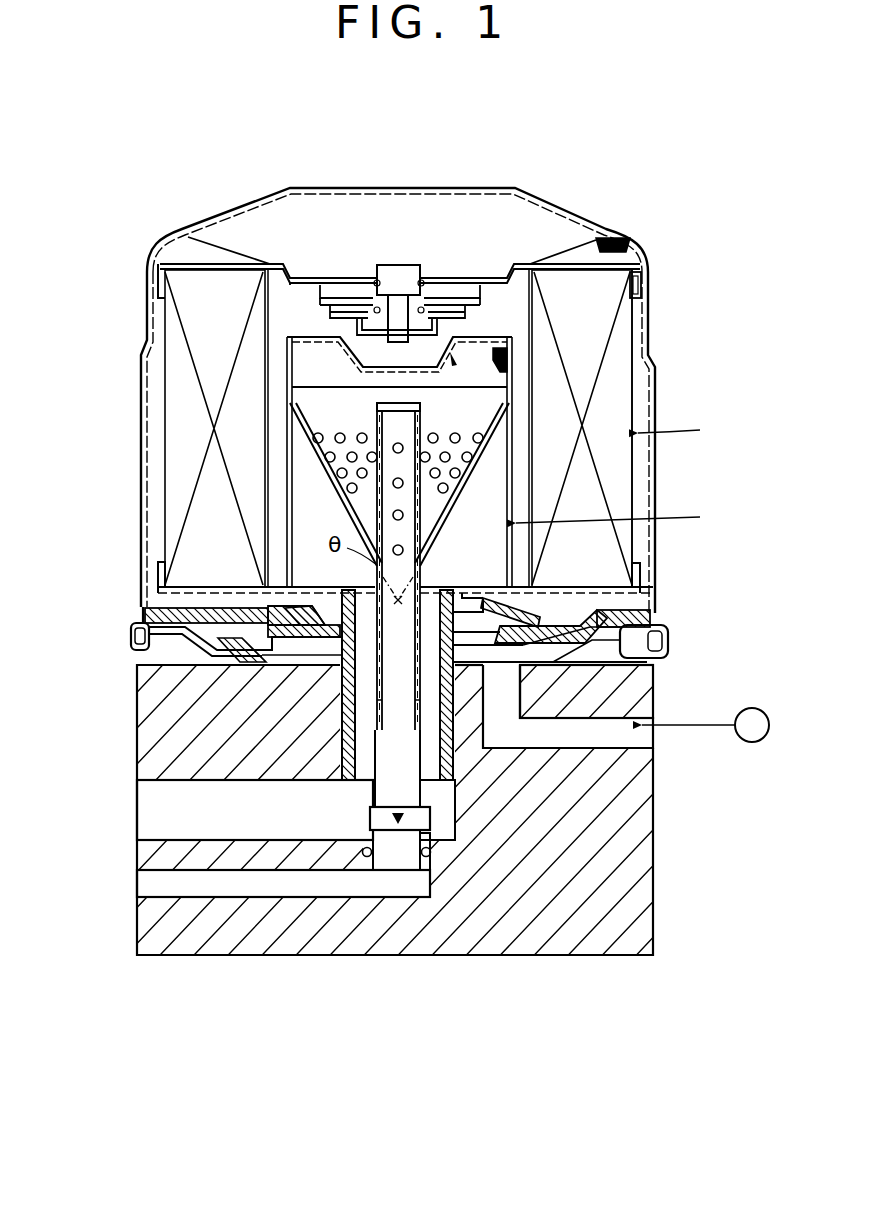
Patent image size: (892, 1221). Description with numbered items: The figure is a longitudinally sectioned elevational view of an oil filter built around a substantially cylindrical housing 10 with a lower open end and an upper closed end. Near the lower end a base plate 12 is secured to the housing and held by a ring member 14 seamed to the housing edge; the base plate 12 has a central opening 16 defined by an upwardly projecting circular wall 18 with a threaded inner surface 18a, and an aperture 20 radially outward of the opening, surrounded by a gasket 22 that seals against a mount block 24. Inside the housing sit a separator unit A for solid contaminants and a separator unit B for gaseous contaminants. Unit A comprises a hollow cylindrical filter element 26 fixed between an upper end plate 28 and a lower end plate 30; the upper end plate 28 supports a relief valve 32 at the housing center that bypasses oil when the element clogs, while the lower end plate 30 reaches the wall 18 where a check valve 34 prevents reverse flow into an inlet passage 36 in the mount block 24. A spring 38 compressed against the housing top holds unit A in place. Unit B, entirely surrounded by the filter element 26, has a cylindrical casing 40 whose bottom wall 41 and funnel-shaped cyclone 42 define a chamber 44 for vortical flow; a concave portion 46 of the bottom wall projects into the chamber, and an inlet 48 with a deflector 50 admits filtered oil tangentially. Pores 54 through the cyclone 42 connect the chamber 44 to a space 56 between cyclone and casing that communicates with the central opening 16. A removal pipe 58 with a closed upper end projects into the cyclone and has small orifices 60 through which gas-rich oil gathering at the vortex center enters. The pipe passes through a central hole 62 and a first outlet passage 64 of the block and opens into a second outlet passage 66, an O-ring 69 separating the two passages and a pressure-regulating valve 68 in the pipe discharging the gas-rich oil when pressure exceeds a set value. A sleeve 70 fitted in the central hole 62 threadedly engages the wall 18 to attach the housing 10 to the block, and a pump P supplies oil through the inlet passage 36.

The housing 10 is at (570, 207).
The base plate 12 is at (648, 618).
The ring member 14 is at (630, 655).
The central opening 16 is at (141, 603).
The circular wall 18 is at (482, 565).
The threaded inner surface 18a is at (345, 568).
The aperture 20 is at (600, 688).
The gasket 22 is at (640, 672).
The mount block 24 is at (627, 878).
The filter element 26 is at (620, 376).
The upper end plate 28 is at (632, 268).
The lower end plate 30 is at (600, 590).
The relief valve 32 is at (410, 282).
The check valve 34 is at (530, 572).
The inlet passage 36 is at (560, 742).
The spring 38 is at (628, 238).
The cylindrical casing 40 is at (514, 457).
The bottom wall 41 is at (478, 336).
The cyclone 42 is at (483, 445).
The chamber 44 is at (440, 292).
The concave portion 46 is at (378, 368).
The inlet 48 is at (505, 350).
The deflector 50 is at (640, 302).
The pores 54 is at (605, 400).
The space 56 is at (481, 559).
The removal pipe 58 is at (377, 418).
The orifices 60 is at (393, 447).
The central hole 62 is at (342, 742).
The first outlet passage 64 is at (155, 808).
The second outlet passage 66 is at (240, 885).
The pressure-regulating valve 68 is at (373, 818).
The O-ring 69 is at (427, 858).
The sleeve 70 is at (342, 782).
The separator unit A is at (684, 429).
The separator unit B is at (623, 516).
The pump P is at (705, 725).